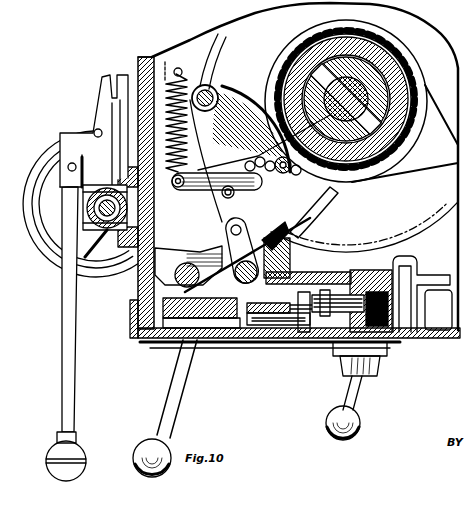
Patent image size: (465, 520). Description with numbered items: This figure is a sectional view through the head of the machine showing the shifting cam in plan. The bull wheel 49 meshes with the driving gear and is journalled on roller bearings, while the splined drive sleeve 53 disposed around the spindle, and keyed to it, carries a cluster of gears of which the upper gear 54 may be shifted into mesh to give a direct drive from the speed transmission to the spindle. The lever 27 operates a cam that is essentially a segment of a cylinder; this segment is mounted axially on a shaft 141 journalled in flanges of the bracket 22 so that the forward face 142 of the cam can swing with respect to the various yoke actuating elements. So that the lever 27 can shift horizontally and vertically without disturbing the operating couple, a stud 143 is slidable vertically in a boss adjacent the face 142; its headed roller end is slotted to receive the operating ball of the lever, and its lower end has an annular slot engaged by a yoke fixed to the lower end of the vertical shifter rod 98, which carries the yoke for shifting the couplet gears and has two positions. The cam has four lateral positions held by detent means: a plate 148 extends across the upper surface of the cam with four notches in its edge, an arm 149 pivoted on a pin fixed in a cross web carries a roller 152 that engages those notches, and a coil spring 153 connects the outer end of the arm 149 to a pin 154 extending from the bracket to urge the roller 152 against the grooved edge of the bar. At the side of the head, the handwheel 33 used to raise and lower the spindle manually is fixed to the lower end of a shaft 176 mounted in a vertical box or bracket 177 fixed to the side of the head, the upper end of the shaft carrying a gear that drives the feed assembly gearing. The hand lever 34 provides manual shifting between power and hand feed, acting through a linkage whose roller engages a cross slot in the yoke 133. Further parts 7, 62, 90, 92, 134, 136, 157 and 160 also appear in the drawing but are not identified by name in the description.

The frame housing 7 is at (137, 316).
The bracket 22 is at (140, 333).
The lever 27 is at (188, 393).
The handwheel 33 is at (118, 283).
The lever 34 is at (363, 418).
The bull wheel 49 is at (422, 284).
The splined drive sleeve 53 is at (400, 73).
The gear 54 is at (365, 86).
The shaft 62 is at (356, 98).
The lever 90 is at (247, 255).
The bushing 92 is at (299, 285).
The shifter rod 98 is at (188, 259).
The yoke 133 is at (325, 338).
The link block 134 is at (262, 345).
The bottom bar 136 is at (172, 349).
The shaft 141 is at (254, 129).
The forward face 142 is at (303, 228).
The stud 143 is at (212, 222).
The plate 148 is at (273, 166).
The arm 149 is at (200, 191).
The roller 152 is at (216, 194).
The coil spring 153 is at (192, 111).
The pin 154 is at (192, 62).
The bushing 157 is at (425, 338).
The arm 160 is at (319, 210).
The shaft 176 is at (110, 180).
The vertical box or bracket 177 is at (107, 232).